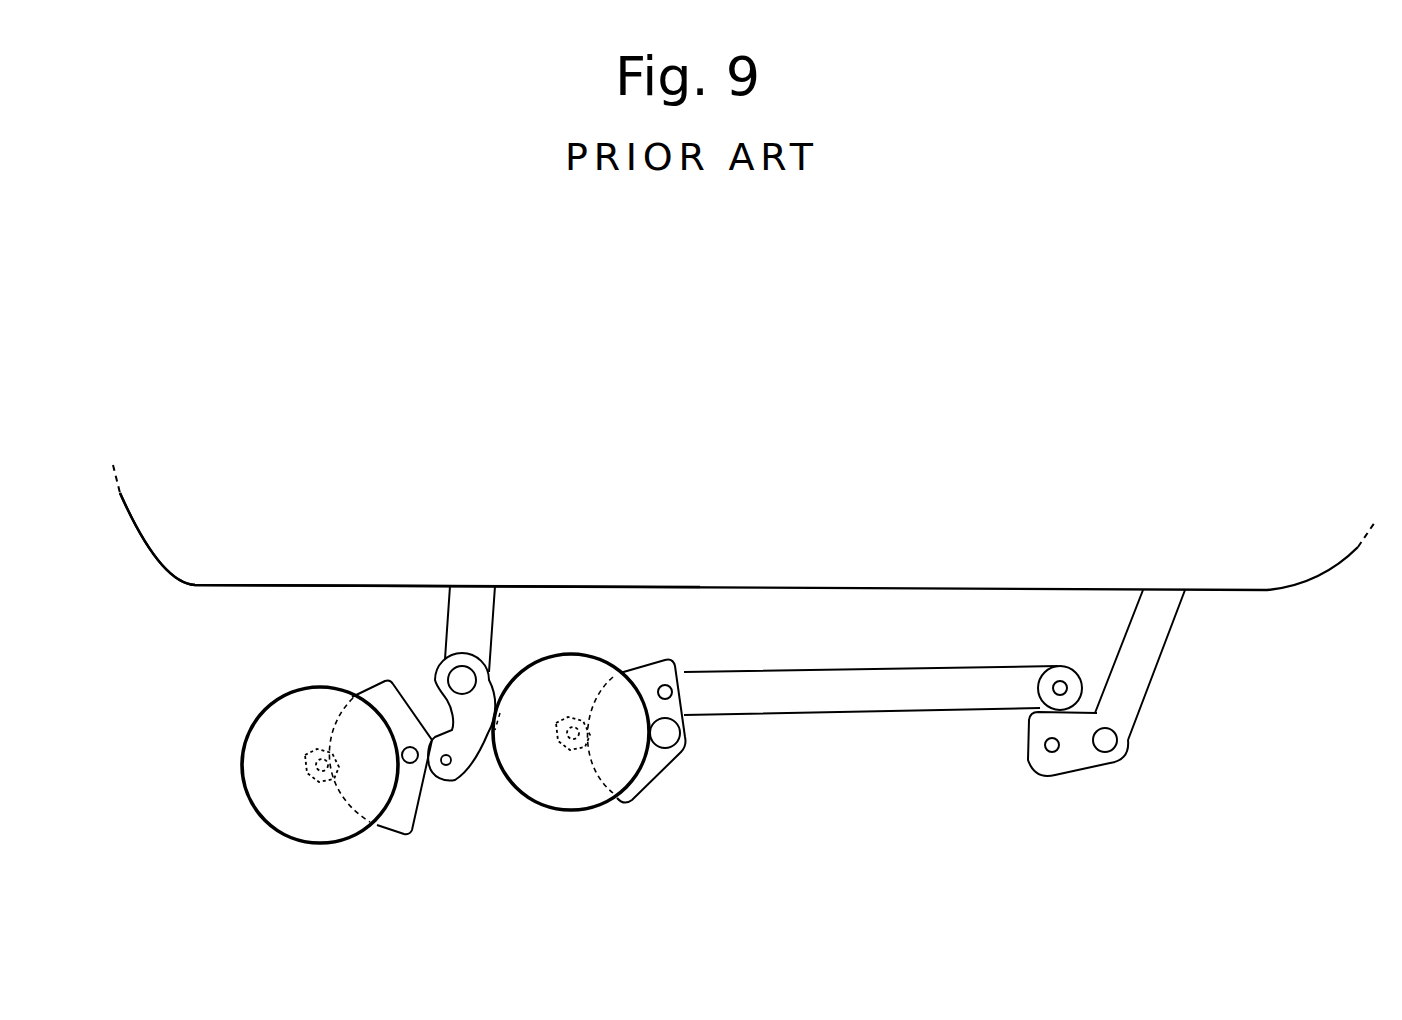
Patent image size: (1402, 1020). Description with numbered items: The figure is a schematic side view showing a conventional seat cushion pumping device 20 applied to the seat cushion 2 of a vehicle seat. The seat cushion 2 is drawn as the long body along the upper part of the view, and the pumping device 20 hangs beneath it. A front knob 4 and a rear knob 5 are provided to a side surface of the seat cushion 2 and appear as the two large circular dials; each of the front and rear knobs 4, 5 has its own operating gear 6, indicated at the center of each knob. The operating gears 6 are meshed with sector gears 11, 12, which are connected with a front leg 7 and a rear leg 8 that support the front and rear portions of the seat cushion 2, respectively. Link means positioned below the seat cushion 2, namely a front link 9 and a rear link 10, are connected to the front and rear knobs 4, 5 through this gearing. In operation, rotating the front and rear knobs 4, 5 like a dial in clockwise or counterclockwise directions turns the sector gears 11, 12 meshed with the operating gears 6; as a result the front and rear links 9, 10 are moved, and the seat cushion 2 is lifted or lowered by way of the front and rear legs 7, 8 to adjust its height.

The seat cushion 2 is at (180, 568).
The seat cushion pumping device 20 is at (683, 530).
The front knob 4 is at (287, 817).
The rear knob 5 is at (583, 798).
The operating gear 6 is at (306, 763).
The front leg 7 is at (460, 620).
The rear leg 8 is at (1140, 680).
The front link 9 is at (458, 678).
The rear link 10 is at (835, 703).
The sector gear 11 is at (402, 822).
The sector gear 12 is at (652, 767).